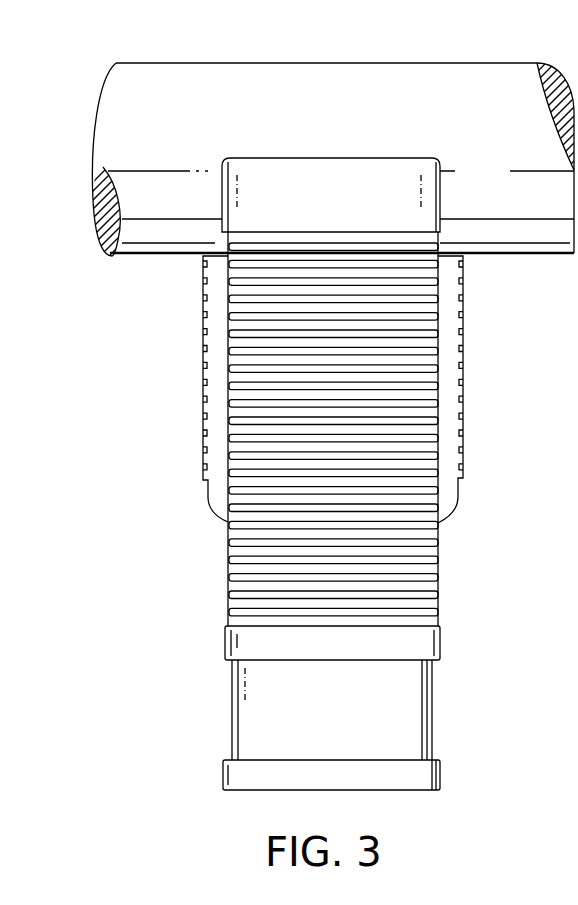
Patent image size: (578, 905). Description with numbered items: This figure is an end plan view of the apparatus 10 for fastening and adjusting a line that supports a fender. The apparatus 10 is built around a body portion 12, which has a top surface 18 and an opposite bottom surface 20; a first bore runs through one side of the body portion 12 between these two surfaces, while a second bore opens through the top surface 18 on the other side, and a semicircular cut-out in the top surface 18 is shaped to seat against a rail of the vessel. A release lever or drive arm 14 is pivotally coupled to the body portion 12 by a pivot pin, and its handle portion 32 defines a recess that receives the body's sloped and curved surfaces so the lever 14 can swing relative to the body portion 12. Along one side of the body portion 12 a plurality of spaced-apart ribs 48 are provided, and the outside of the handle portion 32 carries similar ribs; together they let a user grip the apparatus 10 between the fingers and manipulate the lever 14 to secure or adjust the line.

The apparatus 10 is at (434, 104).
The body portion 12 is at (454, 199).
The release lever or drive arm 14 is at (190, 323).
The top surface 18 is at (315, 157).
The bottom surface 20 is at (327, 791).
The handle portion 32 is at (466, 393).
The ribs 48 is at (442, 313).